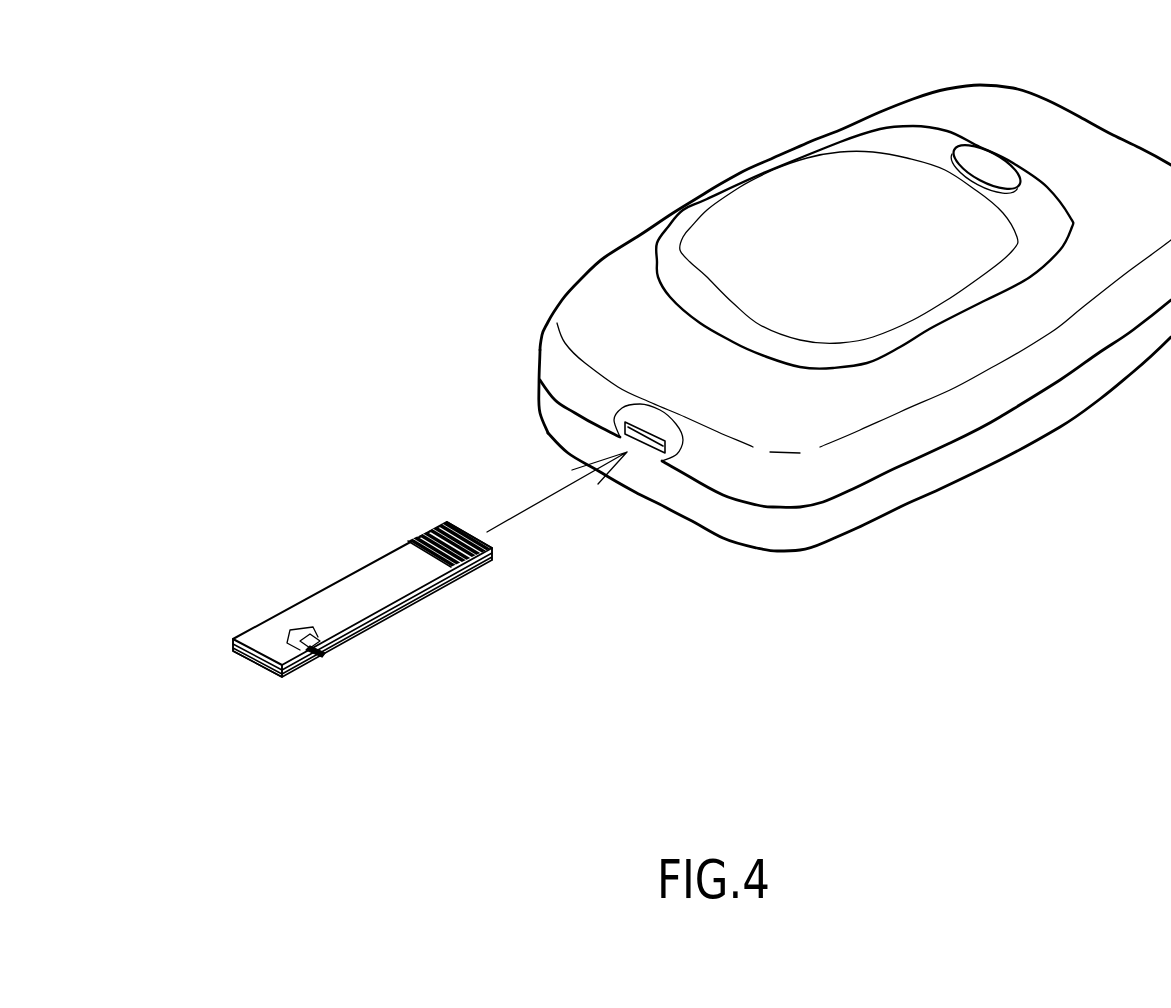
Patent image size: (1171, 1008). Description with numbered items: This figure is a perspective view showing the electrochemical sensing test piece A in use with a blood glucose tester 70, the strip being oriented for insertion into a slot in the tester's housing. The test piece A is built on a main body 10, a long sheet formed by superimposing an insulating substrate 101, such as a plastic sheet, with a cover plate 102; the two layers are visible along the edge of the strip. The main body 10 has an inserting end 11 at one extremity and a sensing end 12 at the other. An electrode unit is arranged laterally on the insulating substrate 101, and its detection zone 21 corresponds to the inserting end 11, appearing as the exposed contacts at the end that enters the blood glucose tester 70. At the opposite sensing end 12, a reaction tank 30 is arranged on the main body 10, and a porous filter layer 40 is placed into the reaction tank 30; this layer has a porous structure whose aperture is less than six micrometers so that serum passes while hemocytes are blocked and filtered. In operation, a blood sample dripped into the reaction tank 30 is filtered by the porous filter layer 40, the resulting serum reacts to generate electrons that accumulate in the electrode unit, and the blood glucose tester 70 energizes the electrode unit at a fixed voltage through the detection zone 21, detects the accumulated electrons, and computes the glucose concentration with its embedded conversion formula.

The blood glucose tester 70 is at (632, 143).
The electrochemical sensing test piece A is at (243, 591).
The main body 10 is at (517, 632).
The insulating substrate 101 is at (375, 623).
The cover plate 102 is at (390, 606).
The inserting end 11 is at (488, 533).
The sensing end 12 is at (237, 652).
The detection zone 21 is at (490, 558).
The reaction tank 30 is at (338, 664).
The porous filter layer 40 is at (341, 645).